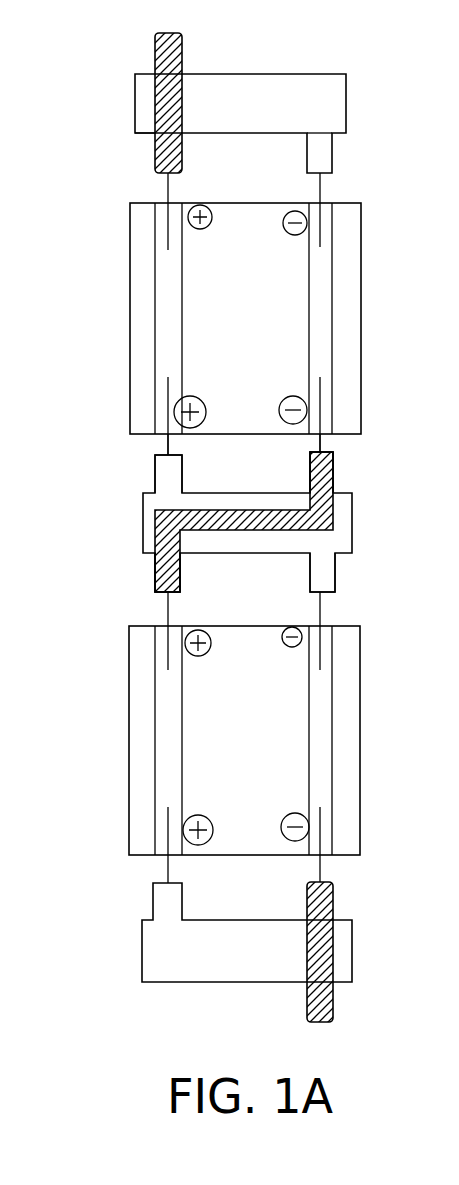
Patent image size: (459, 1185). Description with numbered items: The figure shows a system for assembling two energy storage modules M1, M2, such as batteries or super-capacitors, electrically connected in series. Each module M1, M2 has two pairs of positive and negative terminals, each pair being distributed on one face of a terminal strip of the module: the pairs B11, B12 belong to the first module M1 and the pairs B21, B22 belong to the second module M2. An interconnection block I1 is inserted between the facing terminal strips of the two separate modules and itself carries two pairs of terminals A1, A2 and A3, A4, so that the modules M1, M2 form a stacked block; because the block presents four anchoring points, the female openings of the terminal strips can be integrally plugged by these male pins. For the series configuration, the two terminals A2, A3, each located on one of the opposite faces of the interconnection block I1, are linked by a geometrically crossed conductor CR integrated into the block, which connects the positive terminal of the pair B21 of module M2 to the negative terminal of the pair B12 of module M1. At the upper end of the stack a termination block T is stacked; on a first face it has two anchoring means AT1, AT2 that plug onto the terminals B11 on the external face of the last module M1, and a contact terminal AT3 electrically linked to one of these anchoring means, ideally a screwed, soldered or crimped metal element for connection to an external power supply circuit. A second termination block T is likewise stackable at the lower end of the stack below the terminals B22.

The termination block T is at (247, 70).
The anchoring means AT1 is at (154, 146).
The anchoring means AT2 is at (333, 146).
The contact terminal AT3 is at (155, 48).
The module M1 is at (130, 327).
The module M2 is at (129, 716).
The pair of positive and negative terminals B11 is at (290, 236).
The pair of positive and negative terminals B12 is at (283, 400).
The pair of positive and negative terminals B21 is at (290, 647).
The pair of positive and negative terminals B22 is at (292, 843).
The interconnection block I1 is at (143, 520).
The geometrically crossed conductor CR is at (333, 514).
The terminal A1 is at (155, 470).
The terminal A2 is at (333, 470).
The terminal A3 is at (155, 570).
The terminal A4 is at (335, 572).